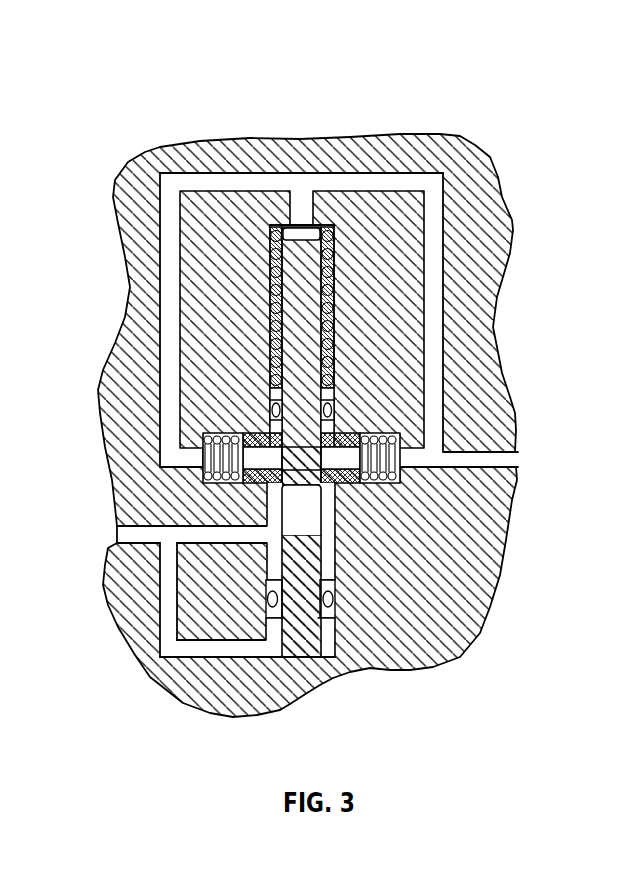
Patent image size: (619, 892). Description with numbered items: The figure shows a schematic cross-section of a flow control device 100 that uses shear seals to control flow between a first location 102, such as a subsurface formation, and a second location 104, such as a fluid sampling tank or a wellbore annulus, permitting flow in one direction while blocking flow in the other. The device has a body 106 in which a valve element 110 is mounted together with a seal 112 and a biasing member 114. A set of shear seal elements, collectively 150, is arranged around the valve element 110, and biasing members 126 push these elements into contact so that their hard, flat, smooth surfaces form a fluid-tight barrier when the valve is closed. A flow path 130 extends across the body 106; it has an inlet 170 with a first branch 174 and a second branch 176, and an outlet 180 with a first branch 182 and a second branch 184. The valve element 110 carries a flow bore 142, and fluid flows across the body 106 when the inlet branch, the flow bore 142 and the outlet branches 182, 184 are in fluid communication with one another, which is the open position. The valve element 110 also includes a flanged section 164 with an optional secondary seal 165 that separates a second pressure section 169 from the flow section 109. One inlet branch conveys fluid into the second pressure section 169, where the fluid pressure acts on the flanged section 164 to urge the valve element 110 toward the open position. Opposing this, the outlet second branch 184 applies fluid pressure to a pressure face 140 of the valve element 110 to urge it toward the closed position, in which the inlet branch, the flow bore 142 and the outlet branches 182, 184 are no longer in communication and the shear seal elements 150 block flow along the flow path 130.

The flow control device 100 is at (474, 89).
The first location 102 is at (105, 532).
The second location 104 is at (531, 461).
The body 106 is at (497, 234).
The flow section 109 is at (330, 522).
The valve element 110 is at (292, 393).
The seal 112 is at (268, 410).
The biasing member 114 is at (276, 250).
The biasing members 126 is at (273, 283).
The flow path 130 is at (128, 690).
The pressure face 140 is at (275, 335).
The flow bore 142 is at (295, 503).
The shear seal elements 150 is at (176, 408).
The flanged section 164 is at (332, 618).
The secondary seal 165 is at (342, 598).
The second pressure section 169 is at (279, 658).
The inlet 170 is at (139, 555).
The first branch 174 is at (165, 598).
The second branch 176 is at (150, 537).
The outlet 180 is at (486, 477).
The first branch 182 is at (428, 462).
The second branch 184 is at (228, 180).